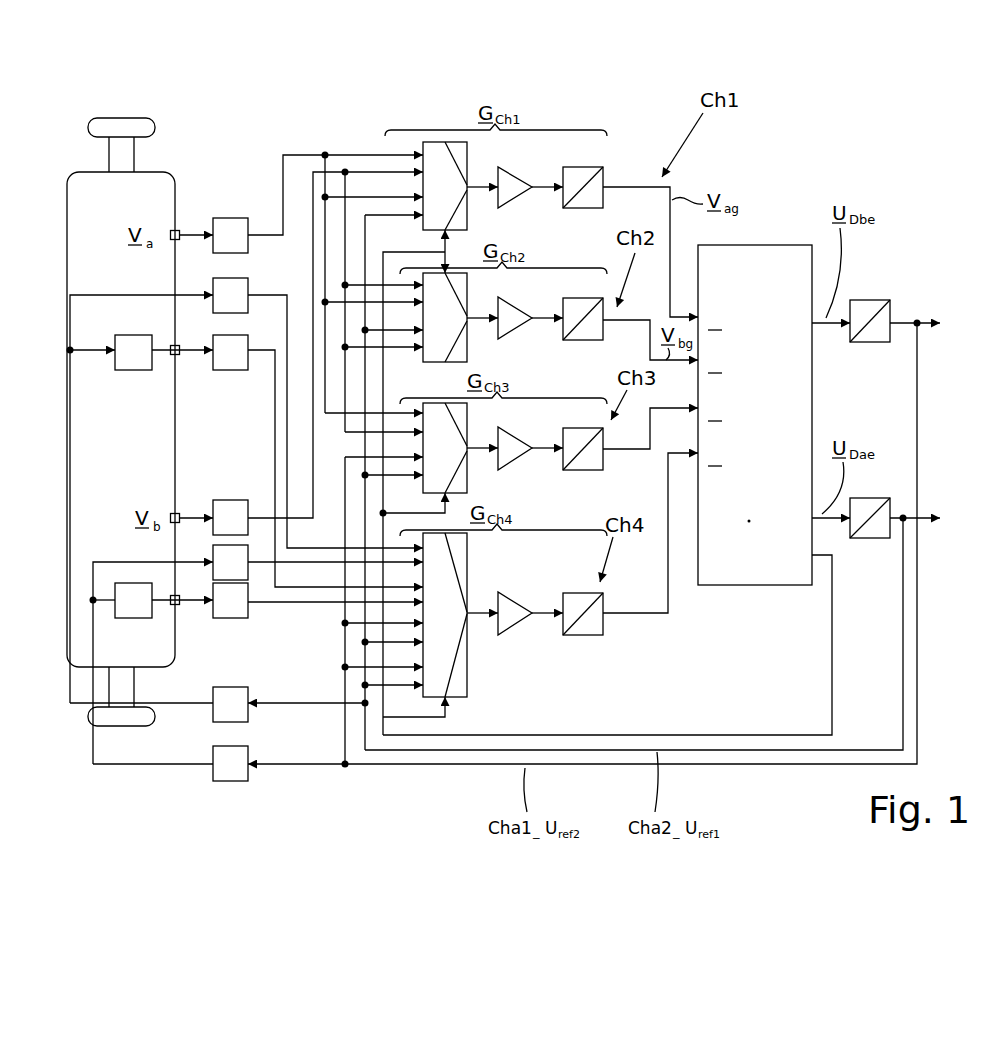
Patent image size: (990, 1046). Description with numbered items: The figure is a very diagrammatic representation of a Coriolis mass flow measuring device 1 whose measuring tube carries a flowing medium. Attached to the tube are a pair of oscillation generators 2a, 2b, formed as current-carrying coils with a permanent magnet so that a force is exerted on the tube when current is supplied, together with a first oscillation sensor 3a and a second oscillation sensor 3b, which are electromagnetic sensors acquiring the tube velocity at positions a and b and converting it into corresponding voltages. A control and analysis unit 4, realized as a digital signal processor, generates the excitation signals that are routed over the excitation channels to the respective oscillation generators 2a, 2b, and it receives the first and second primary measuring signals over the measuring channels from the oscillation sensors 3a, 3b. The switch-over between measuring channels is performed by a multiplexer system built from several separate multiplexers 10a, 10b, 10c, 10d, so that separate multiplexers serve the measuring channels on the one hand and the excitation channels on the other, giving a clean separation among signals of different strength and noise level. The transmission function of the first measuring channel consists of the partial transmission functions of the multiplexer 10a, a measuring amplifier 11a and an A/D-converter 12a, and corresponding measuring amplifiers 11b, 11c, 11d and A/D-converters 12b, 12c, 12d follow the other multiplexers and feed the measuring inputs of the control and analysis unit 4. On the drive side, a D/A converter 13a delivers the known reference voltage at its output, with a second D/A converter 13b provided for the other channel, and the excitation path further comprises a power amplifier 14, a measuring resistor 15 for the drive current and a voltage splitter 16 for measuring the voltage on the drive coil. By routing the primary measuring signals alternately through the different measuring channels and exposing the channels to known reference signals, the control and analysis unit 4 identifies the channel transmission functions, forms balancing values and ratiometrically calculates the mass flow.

The Coriolis mass flow measuring device 1 is at (250, 142).
The oscillation generator 2a is at (147, 362).
The oscillation generator 2b is at (147, 610).
The first oscillation sensor 3a is at (244, 247).
The second oscillation sensor 3b is at (244, 530).
The control and analysis unit 4 is at (731, 287).
The multiplexer 10a is at (463, 197).
The multiplexer 10b is at (463, 328).
The multiplexer 10c is at (463, 458).
The multiplexer 10d is at (452, 602).
The measuring amplifier 11a is at (510, 184).
The measuring amplifier 11b is at (521, 328).
The measuring amplifier 11c is at (521, 455).
The measuring amplifier 11d is at (510, 620).
The A/D-converter 12a is at (580, 178).
The A/D-converter 12b is at (586, 330).
The A/D-converter 12c is at (588, 448).
The A/D-converter 12d is at (578, 630).
The D/A converter 13a is at (873, 541).
The D/A converter 13b is at (877, 345).
The power amplifier 14 is at (244, 715).
The measuring resistor 15 is at (244, 362).
The voltage splitter 16 is at (244, 307).